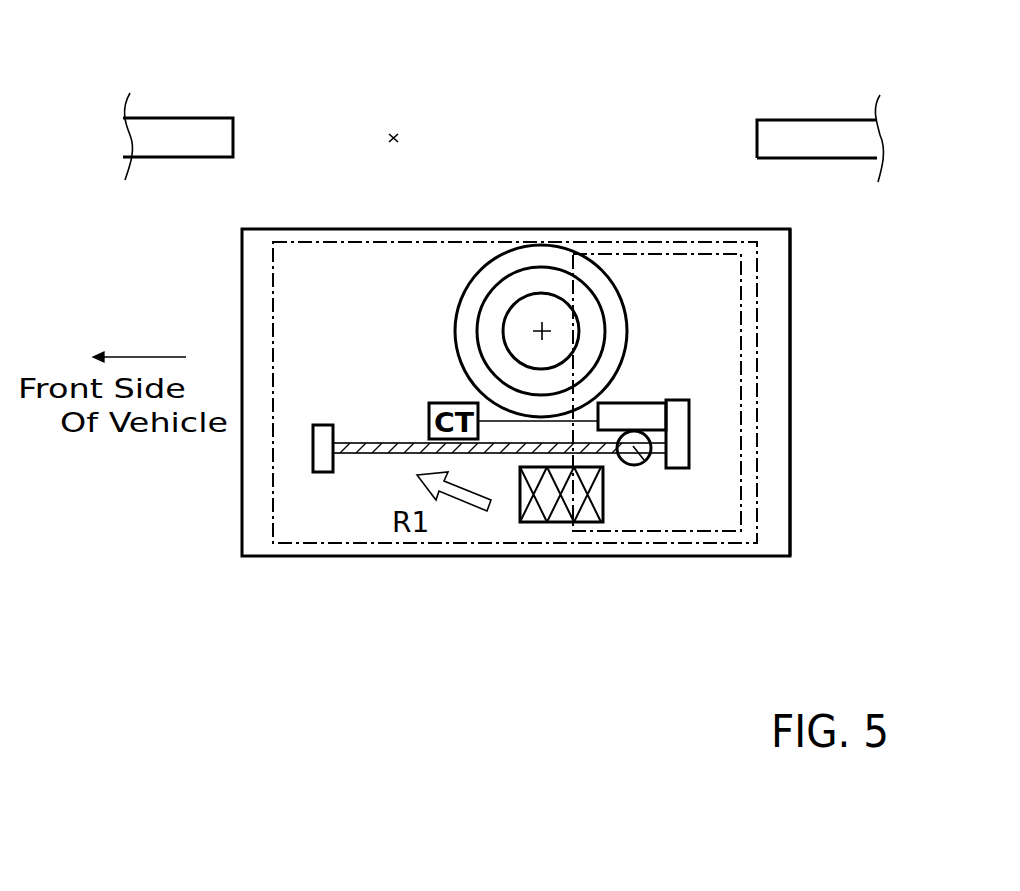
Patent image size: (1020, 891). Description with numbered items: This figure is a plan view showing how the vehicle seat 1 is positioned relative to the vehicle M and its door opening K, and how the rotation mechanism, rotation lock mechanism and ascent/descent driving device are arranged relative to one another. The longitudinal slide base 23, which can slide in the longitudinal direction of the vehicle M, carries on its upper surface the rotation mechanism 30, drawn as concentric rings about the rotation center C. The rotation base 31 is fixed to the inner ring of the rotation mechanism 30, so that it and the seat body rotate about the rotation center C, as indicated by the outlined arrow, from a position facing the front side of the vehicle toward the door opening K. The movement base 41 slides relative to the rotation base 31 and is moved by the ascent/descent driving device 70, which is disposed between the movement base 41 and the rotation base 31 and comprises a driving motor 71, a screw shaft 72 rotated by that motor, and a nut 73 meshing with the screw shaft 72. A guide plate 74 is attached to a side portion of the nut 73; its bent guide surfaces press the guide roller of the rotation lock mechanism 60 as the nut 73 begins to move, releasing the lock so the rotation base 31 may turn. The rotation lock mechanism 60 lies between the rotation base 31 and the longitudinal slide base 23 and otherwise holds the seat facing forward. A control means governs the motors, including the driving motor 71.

The vehicle seat 1 is at (360, 573).
The longitudinal slide base 23 is at (790, 297).
The rotation mechanism 30 is at (487, 264).
The rotation base 31 is at (757, 510).
The movement base 41 is at (780, 411).
The rotation lock mechanism 60 is at (535, 522).
The ascent/descent driving device 70 is at (692, 405).
The driving motor 71 is at (643, 412).
The screw shaft 72 is at (394, 443).
The nut 73 is at (651, 462).
The guide plate 74 is at (625, 467).
The door opening K is at (393, 135).
The vehicle M is at (807, 120).
The rotation center C is at (543, 331).